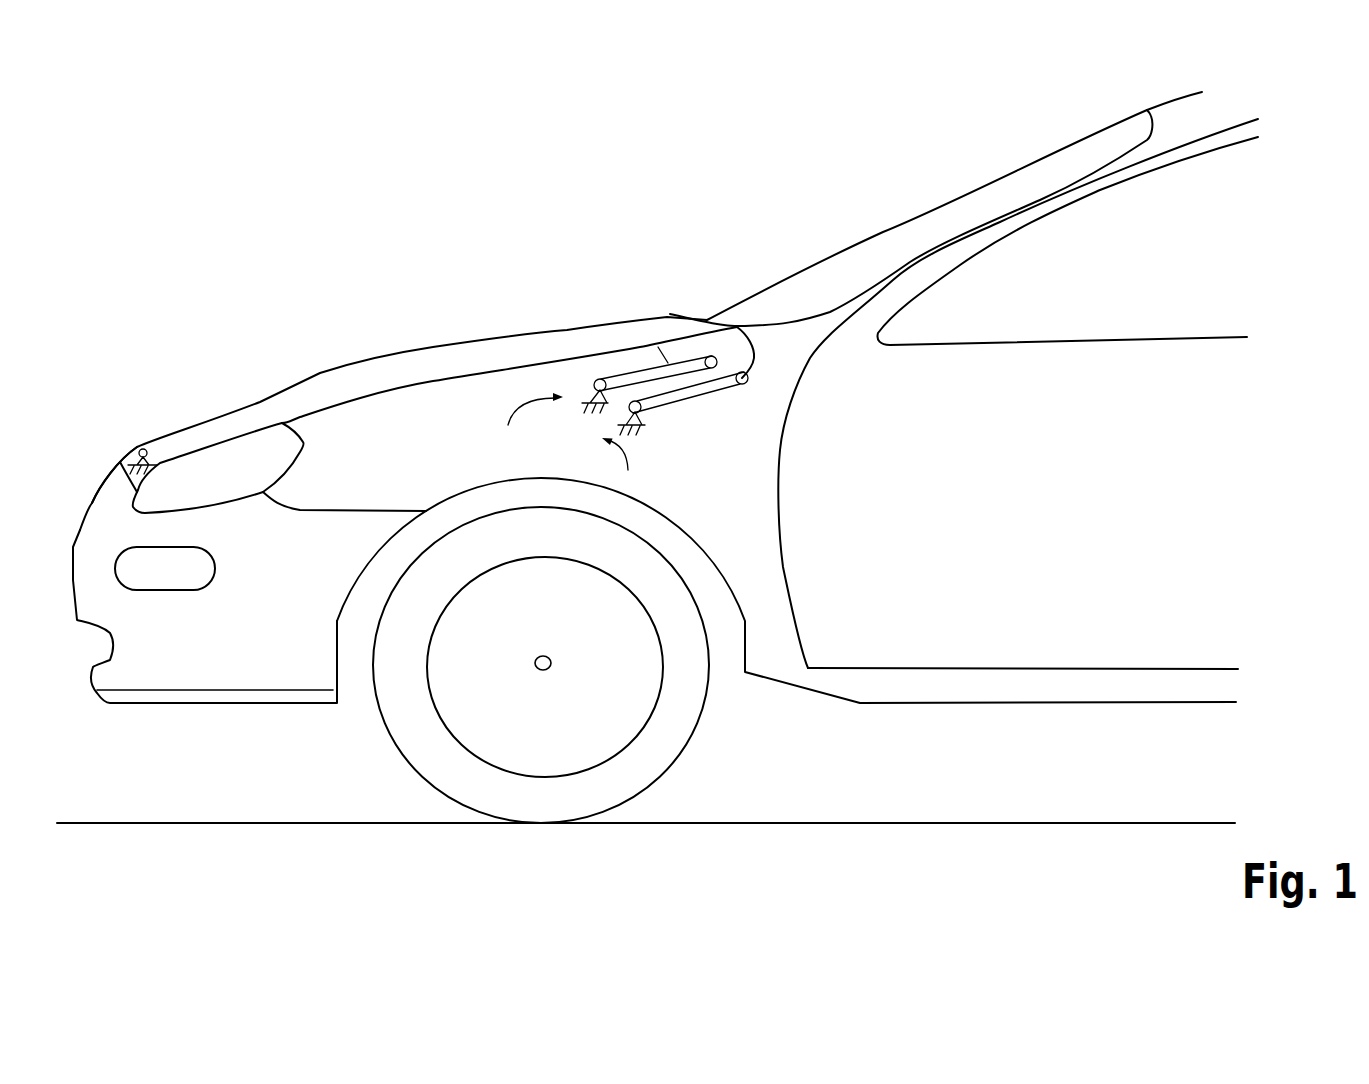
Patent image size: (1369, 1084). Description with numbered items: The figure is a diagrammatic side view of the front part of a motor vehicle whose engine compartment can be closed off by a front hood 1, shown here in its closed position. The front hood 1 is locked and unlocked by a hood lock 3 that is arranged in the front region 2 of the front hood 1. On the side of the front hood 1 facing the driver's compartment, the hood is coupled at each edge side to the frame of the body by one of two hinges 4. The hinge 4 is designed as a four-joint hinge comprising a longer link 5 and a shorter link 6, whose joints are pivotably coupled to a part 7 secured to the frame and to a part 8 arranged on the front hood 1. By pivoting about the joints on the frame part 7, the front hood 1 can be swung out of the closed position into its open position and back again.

The front hood 1 is at (406, 368).
The front region 2 is at (157, 448).
The hood lock 3 is at (124, 436).
The hinge 4 is at (534, 428).
The longer link 5 is at (632, 382).
The shorter link 6 is at (716, 388).
The part secured to the frame 7 is at (622, 466).
The part arranged on the front hood 8 is at (673, 350).